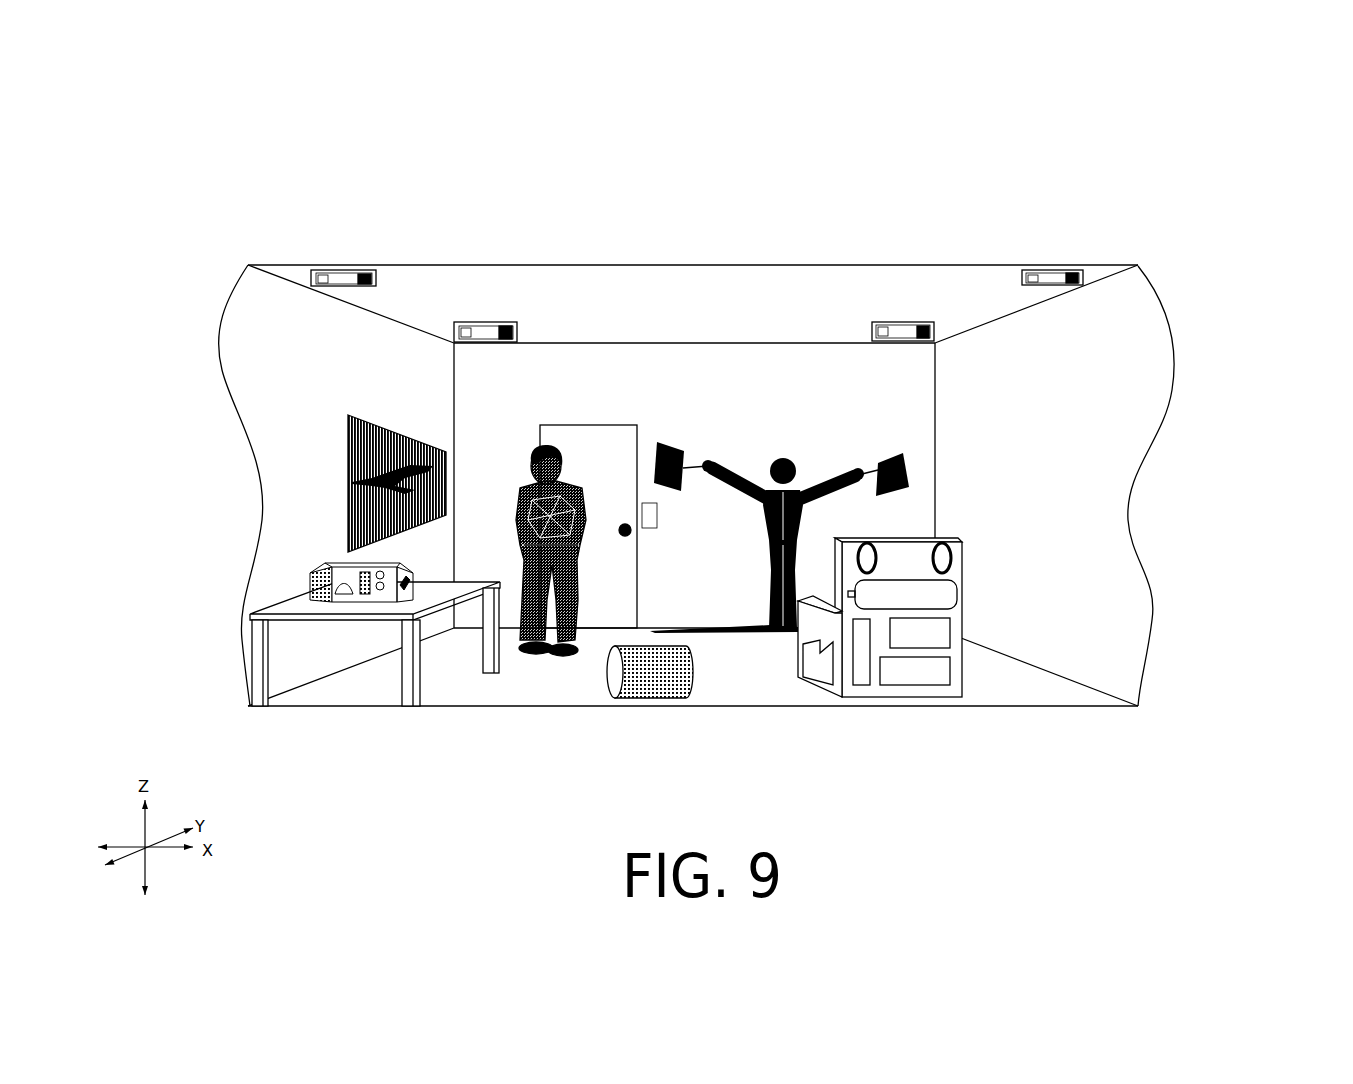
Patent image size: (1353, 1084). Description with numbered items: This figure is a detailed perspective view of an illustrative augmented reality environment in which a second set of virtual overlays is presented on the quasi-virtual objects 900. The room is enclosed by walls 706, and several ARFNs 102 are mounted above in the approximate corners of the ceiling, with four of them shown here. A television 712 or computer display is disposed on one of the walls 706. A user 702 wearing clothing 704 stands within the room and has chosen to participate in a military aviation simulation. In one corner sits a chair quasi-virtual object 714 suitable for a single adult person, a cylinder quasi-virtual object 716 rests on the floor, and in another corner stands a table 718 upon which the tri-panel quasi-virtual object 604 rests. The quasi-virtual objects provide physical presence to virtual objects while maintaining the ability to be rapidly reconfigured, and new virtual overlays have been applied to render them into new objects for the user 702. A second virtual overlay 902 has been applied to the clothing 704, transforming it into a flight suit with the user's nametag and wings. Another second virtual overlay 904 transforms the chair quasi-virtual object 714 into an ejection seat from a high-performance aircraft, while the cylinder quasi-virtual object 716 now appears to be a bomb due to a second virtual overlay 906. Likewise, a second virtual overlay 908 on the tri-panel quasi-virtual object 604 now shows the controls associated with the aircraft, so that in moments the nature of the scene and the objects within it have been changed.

The augmented reality environment with second set of virtual overlays 900 is at (1207, 163).
The user 702 is at (537, 445).
The second virtual overlay 902 is at (558, 490).
The clothing 704 is at (572, 495).
The ARFN 102 is at (1048, 277).
The television 712 is at (347, 455).
The walls 706 is at (255, 433).
The tri-panel quasi-virtual object 604 is at (316, 573).
The table 718 is at (312, 596).
The second virtual overlay 908 is at (373, 588).
The cylinder quasi-virtual object 716 is at (693, 680).
The second virtual overlay 906 is at (677, 698).
The chair quasi-virtual object 714 is at (957, 680).
The second virtual overlay 904 is at (962, 597).